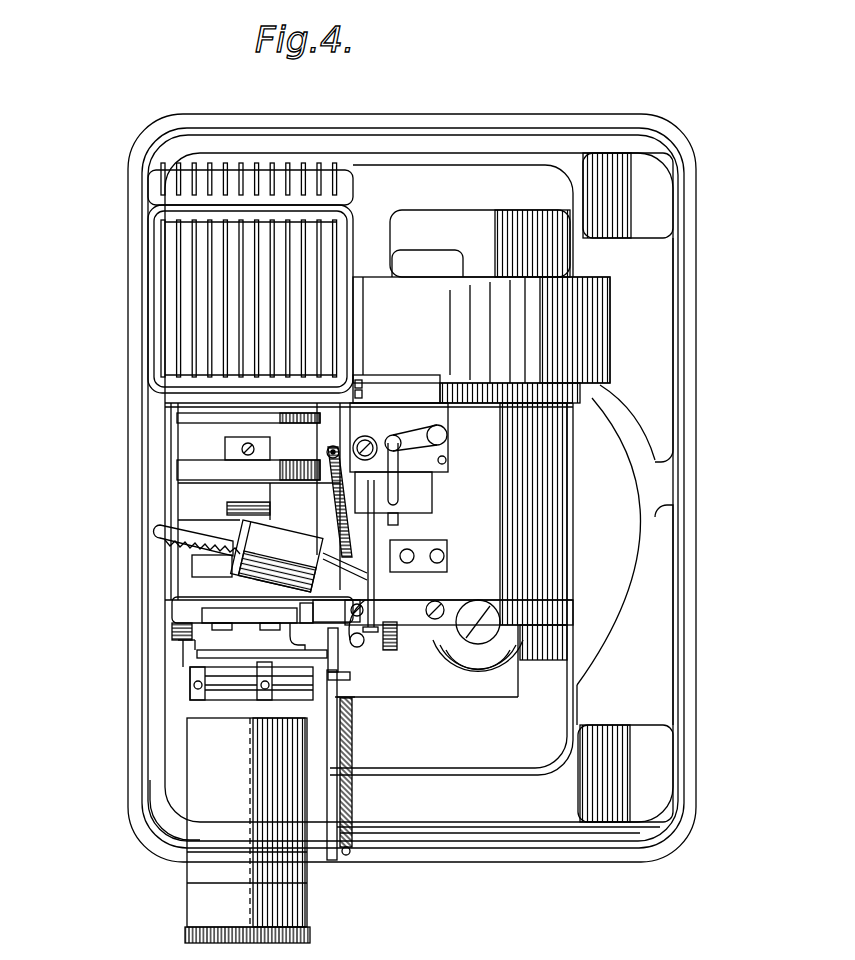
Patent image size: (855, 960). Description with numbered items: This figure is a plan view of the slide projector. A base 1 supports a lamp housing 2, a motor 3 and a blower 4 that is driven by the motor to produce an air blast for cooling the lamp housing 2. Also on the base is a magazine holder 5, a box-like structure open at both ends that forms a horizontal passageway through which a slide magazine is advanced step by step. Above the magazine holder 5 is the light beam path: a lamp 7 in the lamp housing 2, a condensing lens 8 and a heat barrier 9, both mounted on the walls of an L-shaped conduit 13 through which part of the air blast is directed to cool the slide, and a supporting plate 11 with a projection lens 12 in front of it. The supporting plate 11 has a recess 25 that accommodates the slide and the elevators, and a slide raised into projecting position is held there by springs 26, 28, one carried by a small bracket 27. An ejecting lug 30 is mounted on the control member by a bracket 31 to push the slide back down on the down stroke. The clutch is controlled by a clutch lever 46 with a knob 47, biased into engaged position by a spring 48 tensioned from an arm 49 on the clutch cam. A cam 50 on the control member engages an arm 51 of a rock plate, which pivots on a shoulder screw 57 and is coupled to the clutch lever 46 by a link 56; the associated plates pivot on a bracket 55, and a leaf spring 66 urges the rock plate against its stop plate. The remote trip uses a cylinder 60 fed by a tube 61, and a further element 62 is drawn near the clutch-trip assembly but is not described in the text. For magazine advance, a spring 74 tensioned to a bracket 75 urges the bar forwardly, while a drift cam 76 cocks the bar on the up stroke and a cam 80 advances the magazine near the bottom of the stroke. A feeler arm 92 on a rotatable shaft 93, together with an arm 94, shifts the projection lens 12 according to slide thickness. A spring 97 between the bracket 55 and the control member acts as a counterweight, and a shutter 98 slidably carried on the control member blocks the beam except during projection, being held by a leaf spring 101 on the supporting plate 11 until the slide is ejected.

The base 1 is at (128, 312).
The lamp housing 2 is at (150, 240).
The motor 3 is at (537, 520).
The blower 4 is at (595, 313).
The magazine holder 5 is at (170, 833).
The lamp 7 is at (617, 426).
The condensing lens 8 is at (190, 460).
The heat barrier 9 is at (192, 565).
The supporting plate 11 is at (177, 609).
The projection lens 12 is at (225, 845).
The L-shaped conduit 13 is at (183, 495).
The recess 25 is at (183, 616).
The spring 26 is at (180, 623).
The small bracket 27 is at (181, 629).
The spring 28 is at (302, 612).
The ejecting lug 30 is at (212, 603).
The bracket 31 is at (279, 639).
The clutch lever 46 is at (415, 428).
The knob 47 is at (440, 437).
The spring 48 is at (335, 496).
The arm 49 is at (347, 452).
The cam 50 is at (383, 630).
The arm 51 is at (380, 586).
The bracket 55 is at (338, 612).
The link 56 is at (400, 479).
The shoulder screw 57 is at (395, 521).
The cylinder 60 is at (260, 527).
The tube 61 is at (160, 532).
The base bar 62 is at (400, 629).
The leaf spring 66 is at (385, 548).
The spring 74 is at (352, 735).
The bracket 75 is at (343, 855).
The drift cam 76 is at (335, 664).
The cam 80 is at (335, 648).
The feeler arm 92 is at (190, 671).
The rotatable shaft 93 is at (228, 690).
The arm 94 is at (252, 700).
The spring 97 is at (365, 645).
The shutter 98 is at (262, 644).
The leaf spring 101 is at (183, 641).